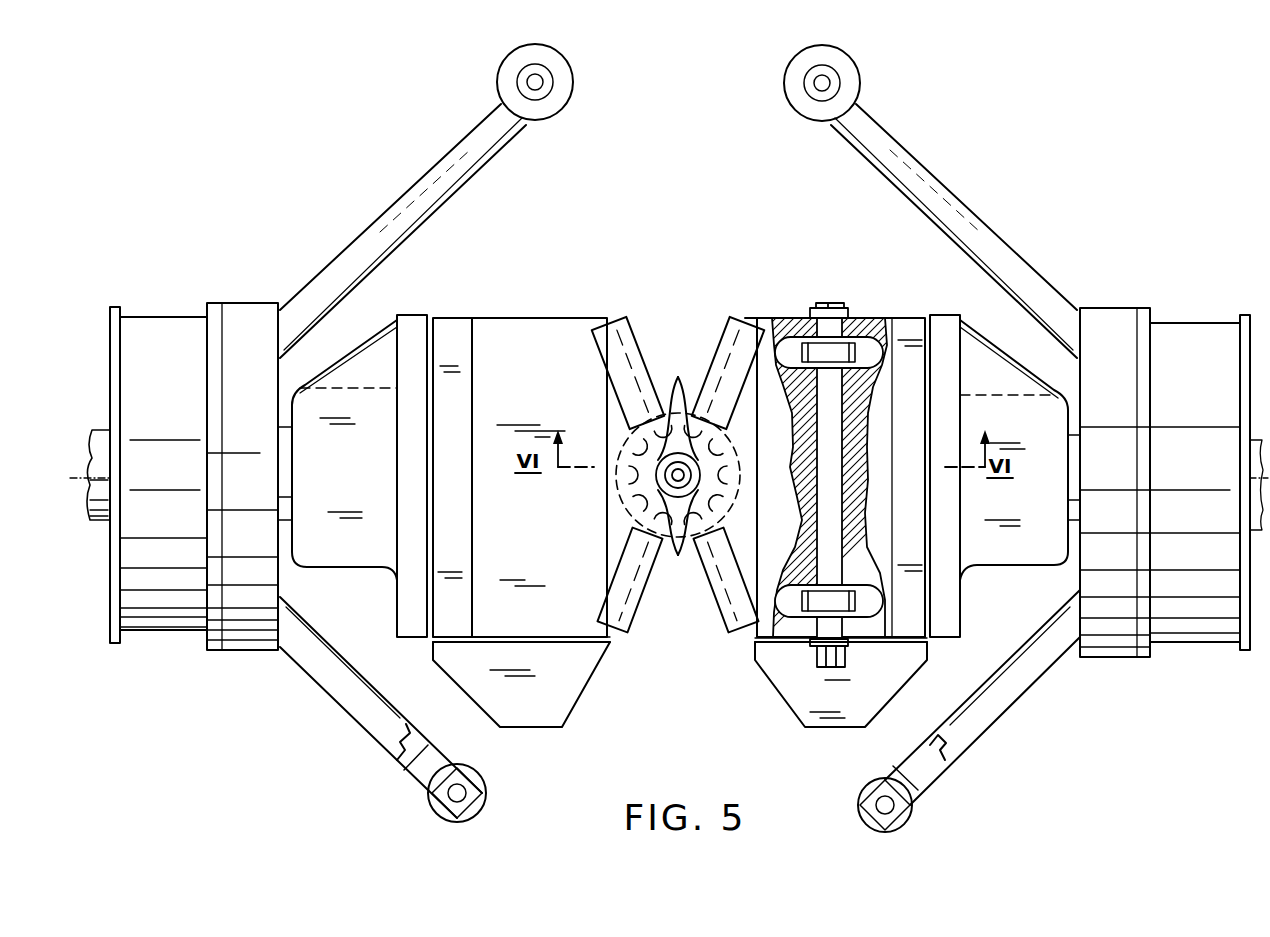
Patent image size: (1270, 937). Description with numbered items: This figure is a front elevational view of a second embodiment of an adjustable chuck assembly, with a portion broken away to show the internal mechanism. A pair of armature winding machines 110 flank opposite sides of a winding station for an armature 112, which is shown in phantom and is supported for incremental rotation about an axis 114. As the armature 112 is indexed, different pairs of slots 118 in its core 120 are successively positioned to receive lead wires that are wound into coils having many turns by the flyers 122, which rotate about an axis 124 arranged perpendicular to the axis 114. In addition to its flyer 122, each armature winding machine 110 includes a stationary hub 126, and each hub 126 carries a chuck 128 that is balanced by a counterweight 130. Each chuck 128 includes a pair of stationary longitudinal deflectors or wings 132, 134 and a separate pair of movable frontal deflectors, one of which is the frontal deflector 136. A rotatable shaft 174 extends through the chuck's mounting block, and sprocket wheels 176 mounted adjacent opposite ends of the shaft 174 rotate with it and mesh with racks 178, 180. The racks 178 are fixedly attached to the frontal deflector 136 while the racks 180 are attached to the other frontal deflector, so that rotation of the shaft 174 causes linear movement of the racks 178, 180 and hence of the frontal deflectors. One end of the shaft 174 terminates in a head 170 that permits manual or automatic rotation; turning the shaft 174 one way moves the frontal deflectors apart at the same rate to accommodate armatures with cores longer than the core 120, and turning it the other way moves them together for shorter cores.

The armature winding machine 110 is at (272, 294).
The armature 112 is at (666, 468).
The axis 114 is at (674, 477).
The slots 118 is at (673, 468).
The core 120 is at (700, 474).
The flyer 122 is at (440, 170).
The axis 124 is at (84, 474).
The stationary hub 126 is at (380, 575).
The chuck 128 is at (558, 312).
The counterweight 130 is at (570, 678).
The longitudinal deflector 132 is at (636, 334).
The longitudinal deflector 134 is at (636, 614).
The frontal deflector 136 is at (576, 535).
The head 170 is at (821, 662).
The rotatable shaft 174 is at (767, 472).
The sprocket wheel 176 is at (833, 304).
The rack 178 is at (790, 348).
The rack 180 is at (875, 331).